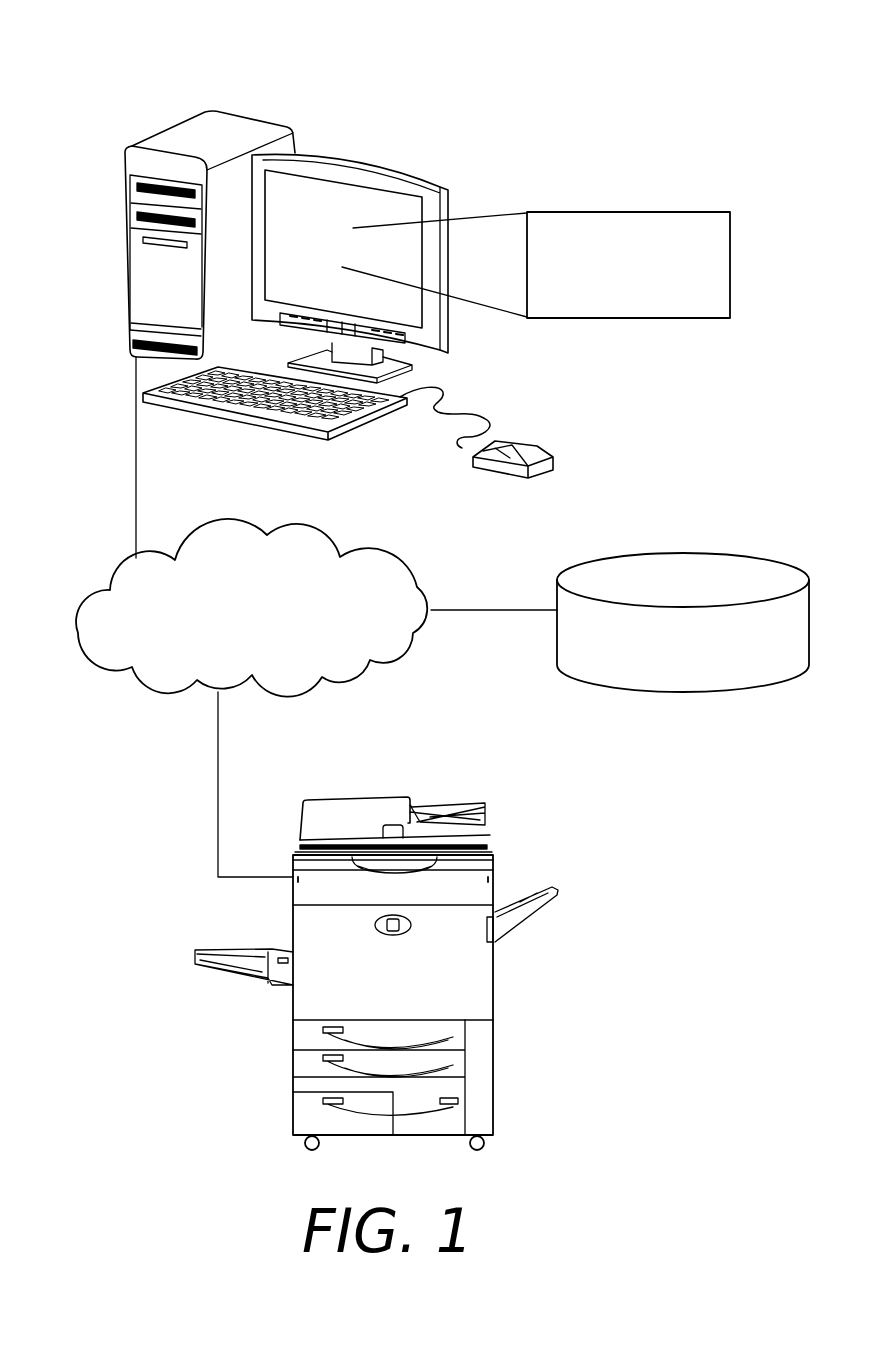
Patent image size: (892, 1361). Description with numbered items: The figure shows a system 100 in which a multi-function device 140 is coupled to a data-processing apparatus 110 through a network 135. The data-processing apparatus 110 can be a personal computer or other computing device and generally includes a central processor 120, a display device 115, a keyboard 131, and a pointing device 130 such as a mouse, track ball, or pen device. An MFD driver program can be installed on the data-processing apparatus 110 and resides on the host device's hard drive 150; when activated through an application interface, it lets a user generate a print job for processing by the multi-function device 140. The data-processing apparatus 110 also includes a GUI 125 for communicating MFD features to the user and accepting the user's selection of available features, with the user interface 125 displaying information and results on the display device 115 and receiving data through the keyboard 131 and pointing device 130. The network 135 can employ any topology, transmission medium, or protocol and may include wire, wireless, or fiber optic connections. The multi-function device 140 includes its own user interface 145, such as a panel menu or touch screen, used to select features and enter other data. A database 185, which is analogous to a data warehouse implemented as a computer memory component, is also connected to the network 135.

The system 100 is at (558, 88).
The data-processing apparatus 110 is at (380, 203).
The display device 115 is at (353, 158).
The central processor 120 is at (127, 350).
The GUI 125 is at (660, 207).
The pointing device 130 is at (525, 441).
The keyboard 131 is at (240, 408).
The network 135 is at (297, 532).
The multi-function device 140 is at (348, 798).
The user interface 145 is at (497, 837).
The hard drive 150 is at (173, 127).
The database 185 is at (733, 553).